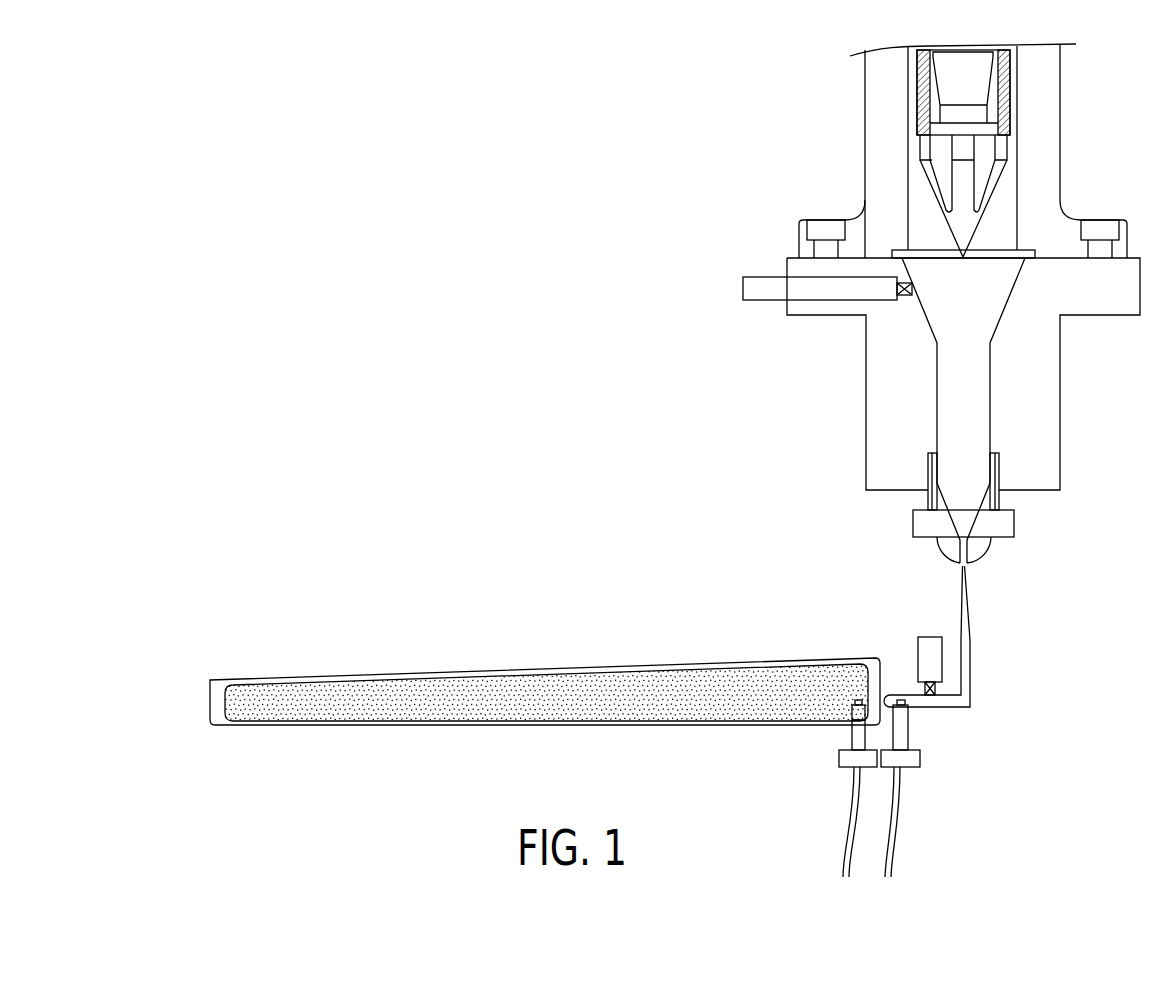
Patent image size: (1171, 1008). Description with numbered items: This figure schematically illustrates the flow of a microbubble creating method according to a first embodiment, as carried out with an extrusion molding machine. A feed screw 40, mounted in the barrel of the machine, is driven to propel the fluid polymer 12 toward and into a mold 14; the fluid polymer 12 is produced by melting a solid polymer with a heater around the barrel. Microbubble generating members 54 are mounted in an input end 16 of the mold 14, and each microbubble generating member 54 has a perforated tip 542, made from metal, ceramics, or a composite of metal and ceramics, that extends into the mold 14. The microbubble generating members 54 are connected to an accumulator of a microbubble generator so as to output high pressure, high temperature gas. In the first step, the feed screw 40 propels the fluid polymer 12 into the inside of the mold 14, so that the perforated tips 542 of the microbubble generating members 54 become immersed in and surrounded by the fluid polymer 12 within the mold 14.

The feed screw 40 is at (1004, 192).
The mold 14 is at (222, 660).
The fluid polymer 12 is at (583, 695).
The input end 16 is at (890, 668).
The perforated tip 542 is at (851, 707).
The microbubble generating member 54 is at (828, 759).